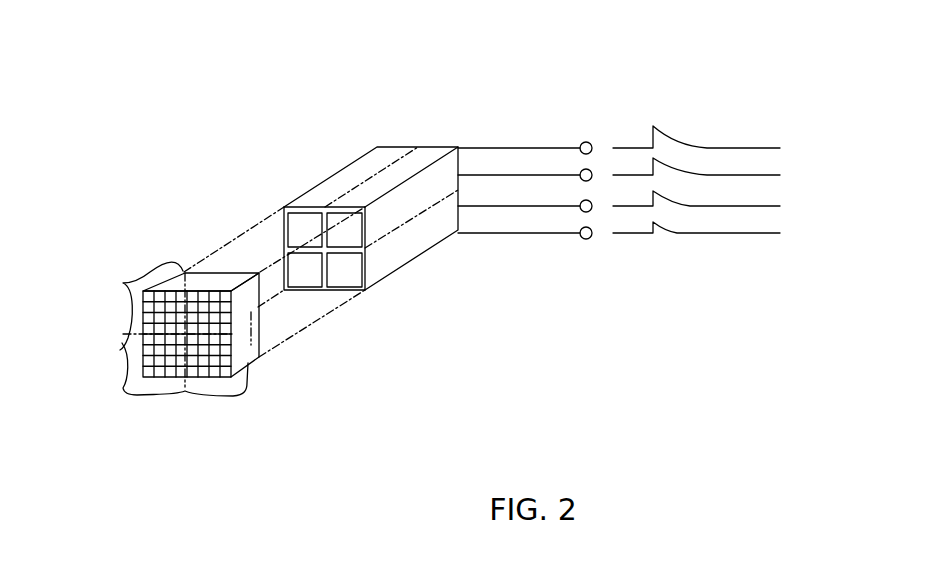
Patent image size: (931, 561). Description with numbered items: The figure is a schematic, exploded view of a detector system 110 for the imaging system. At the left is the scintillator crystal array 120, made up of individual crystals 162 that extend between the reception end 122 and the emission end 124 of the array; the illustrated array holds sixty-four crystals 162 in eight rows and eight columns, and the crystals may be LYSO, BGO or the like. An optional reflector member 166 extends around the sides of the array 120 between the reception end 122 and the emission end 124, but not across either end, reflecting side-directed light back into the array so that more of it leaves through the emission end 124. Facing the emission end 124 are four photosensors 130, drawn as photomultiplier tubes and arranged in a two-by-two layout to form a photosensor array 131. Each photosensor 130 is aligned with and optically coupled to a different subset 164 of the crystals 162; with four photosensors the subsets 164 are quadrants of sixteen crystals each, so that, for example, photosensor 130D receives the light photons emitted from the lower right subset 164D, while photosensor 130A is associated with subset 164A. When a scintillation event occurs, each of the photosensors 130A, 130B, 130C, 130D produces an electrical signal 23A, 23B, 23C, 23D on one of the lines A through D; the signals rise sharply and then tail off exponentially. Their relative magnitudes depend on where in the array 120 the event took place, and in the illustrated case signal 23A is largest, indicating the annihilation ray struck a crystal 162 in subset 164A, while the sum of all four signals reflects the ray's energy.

The detector system 110 is at (219, 146).
The scintillator crystal array 120 is at (183, 409).
The reception end 122 is at (137, 318).
The emission end 124 is at (225, 268).
The photosensor 130 is at (284, 222).
The photosensor A 130A is at (288, 207).
The photosensor B 130B is at (352, 229).
The photosensor C 130C is at (305, 284).
The photosensor D 130D is at (363, 285).
The photosensor array 131 is at (350, 157).
The crystal 162 is at (210, 372).
The subset of crystals 164 is at (165, 373).
The subset A 164A is at (127, 306).
The lower right subset 164D is at (235, 336).
The reflector member 166 is at (256, 365).
The signal A 23A is at (763, 148).
The signal B 23B is at (763, 175).
The signal C 23C is at (763, 206).
The signal D 23D is at (763, 233).